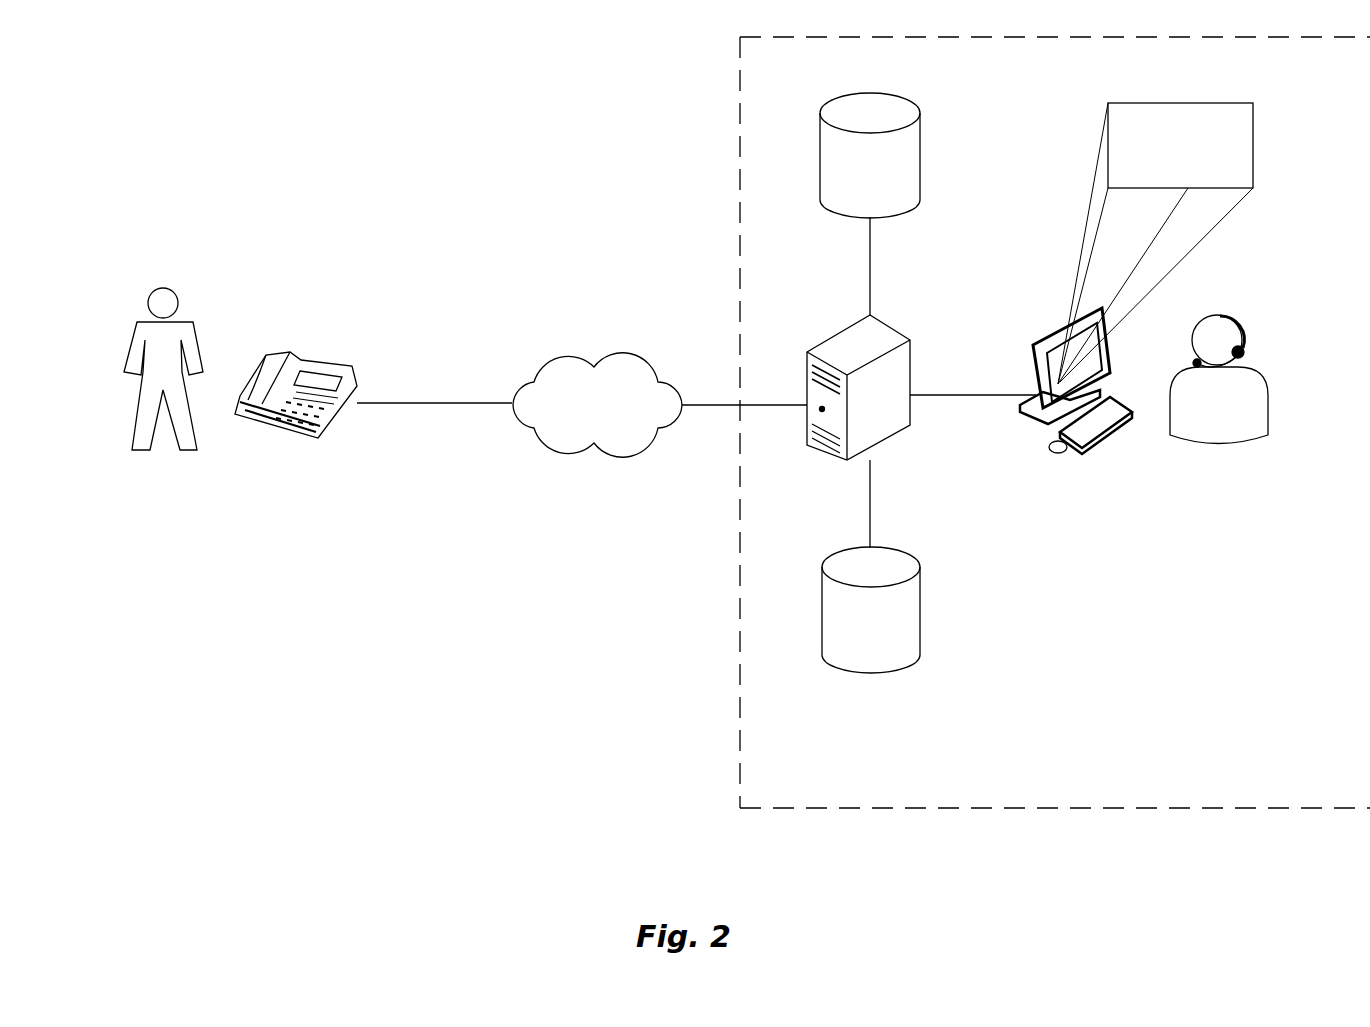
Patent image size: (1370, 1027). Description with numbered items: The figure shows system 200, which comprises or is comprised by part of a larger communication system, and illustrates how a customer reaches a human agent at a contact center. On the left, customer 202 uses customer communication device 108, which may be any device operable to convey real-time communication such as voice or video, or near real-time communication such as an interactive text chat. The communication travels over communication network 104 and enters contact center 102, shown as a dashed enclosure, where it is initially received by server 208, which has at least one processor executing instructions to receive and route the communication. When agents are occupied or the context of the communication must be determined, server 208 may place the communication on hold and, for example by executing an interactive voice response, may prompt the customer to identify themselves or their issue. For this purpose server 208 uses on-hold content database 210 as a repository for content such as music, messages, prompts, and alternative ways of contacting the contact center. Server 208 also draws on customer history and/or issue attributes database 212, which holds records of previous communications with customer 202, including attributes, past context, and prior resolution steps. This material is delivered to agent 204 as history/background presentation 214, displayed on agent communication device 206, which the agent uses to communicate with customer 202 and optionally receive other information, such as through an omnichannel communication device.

The system 200 is at (132, 108).
The customer 202 is at (195, 322).
The customer communication device 108 is at (352, 370).
The communication network 104 is at (616, 358).
The contact center 102 is at (1052, 808).
The server 208 is at (893, 333).
The on-hold content database 210 is at (916, 137).
The customer history and/or issue attributes database 212 is at (905, 553).
The agent communication device 206 is at (1107, 438).
The history/background presentation 214 is at (1253, 127).
The agent 204 is at (1229, 427).